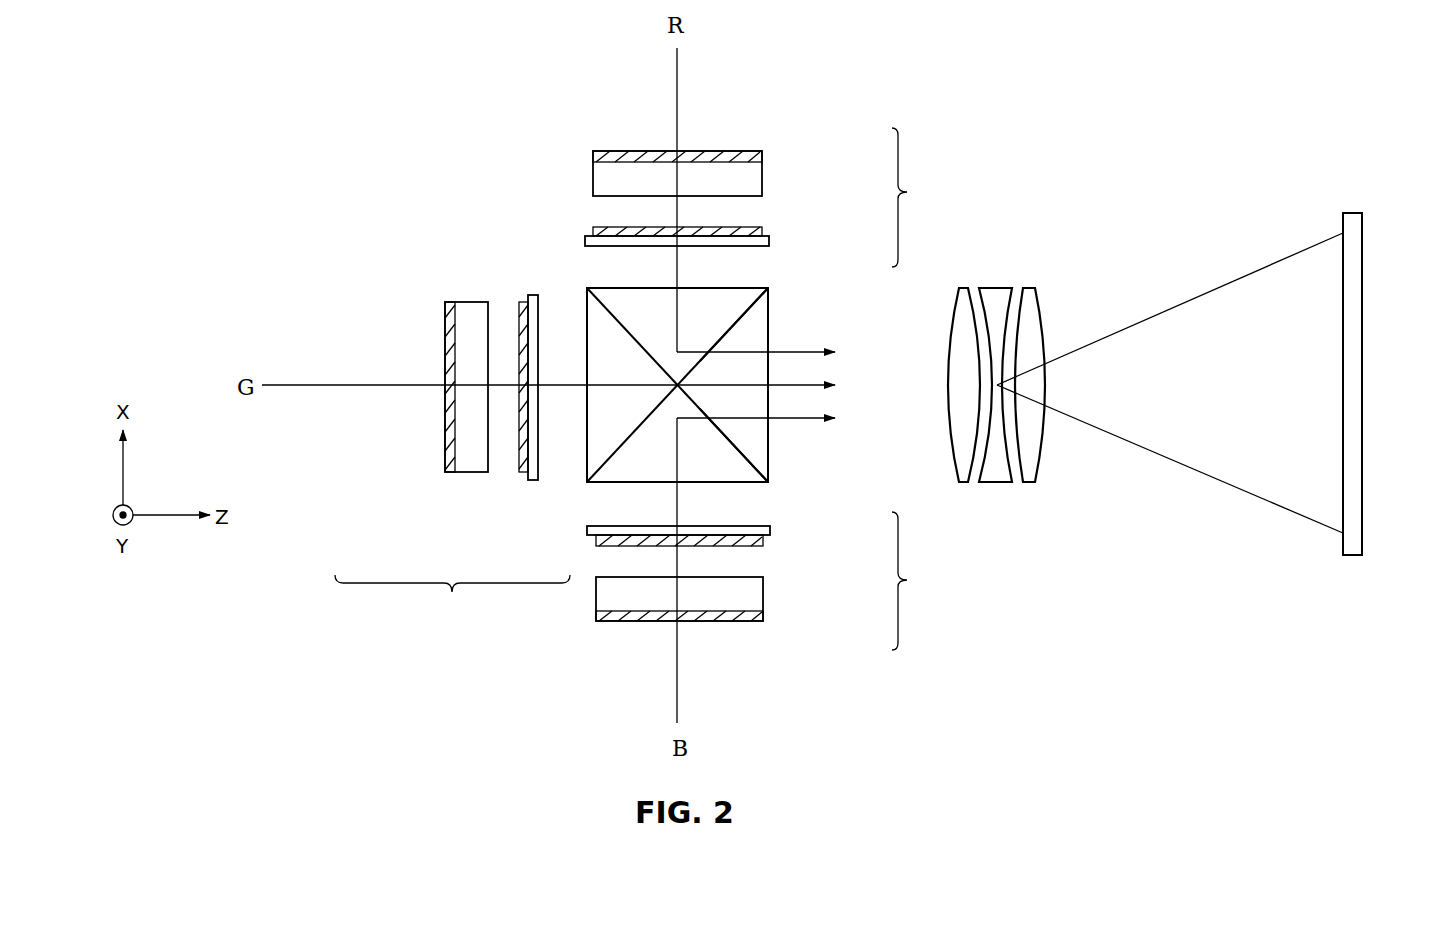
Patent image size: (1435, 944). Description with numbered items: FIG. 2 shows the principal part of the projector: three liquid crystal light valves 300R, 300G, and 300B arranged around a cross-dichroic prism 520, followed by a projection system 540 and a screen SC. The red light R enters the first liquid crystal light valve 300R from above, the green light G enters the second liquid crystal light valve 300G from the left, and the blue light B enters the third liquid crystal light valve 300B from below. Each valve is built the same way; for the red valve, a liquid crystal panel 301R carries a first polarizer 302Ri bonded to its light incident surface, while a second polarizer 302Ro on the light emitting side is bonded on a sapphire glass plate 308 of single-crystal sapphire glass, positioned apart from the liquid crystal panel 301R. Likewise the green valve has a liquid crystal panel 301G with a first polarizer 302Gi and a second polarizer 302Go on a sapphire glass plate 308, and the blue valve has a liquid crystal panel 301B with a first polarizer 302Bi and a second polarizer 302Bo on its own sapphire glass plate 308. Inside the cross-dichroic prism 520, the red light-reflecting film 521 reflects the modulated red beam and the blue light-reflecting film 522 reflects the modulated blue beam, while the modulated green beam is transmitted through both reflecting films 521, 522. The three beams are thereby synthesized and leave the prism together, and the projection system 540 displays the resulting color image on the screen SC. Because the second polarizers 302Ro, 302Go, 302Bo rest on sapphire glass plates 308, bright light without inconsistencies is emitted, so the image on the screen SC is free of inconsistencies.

The first liquid crystal light valve 300R is at (928, 197).
The liquid crystal panel 301R is at (762, 184).
The first polarizer 302Ri is at (762, 153).
The second polarizer 302Ro is at (762, 231).
The sapphire glass plate 308 is at (769, 241).
The second liquid crystal light valve 300G is at (452, 596).
The liquid crystal panel 301G is at (468, 472).
The first polarizer 302Gi is at (448, 472).
The second polarizer 302Go is at (523, 472).
The third liquid crystal light valve 300B is at (929, 581).
The liquid crystal panel 301B is at (763, 592).
The first polarizer 302Bi is at (763, 616).
The second polarizer 302Bo is at (763, 541).
The cross-dichroic prism 520 is at (760, 299).
The red light-reflecting film 521 is at (735, 447).
The blue light-reflecting film 522 is at (730, 331).
The projection system 540 is at (998, 288).
The screen SC is at (1362, 240).